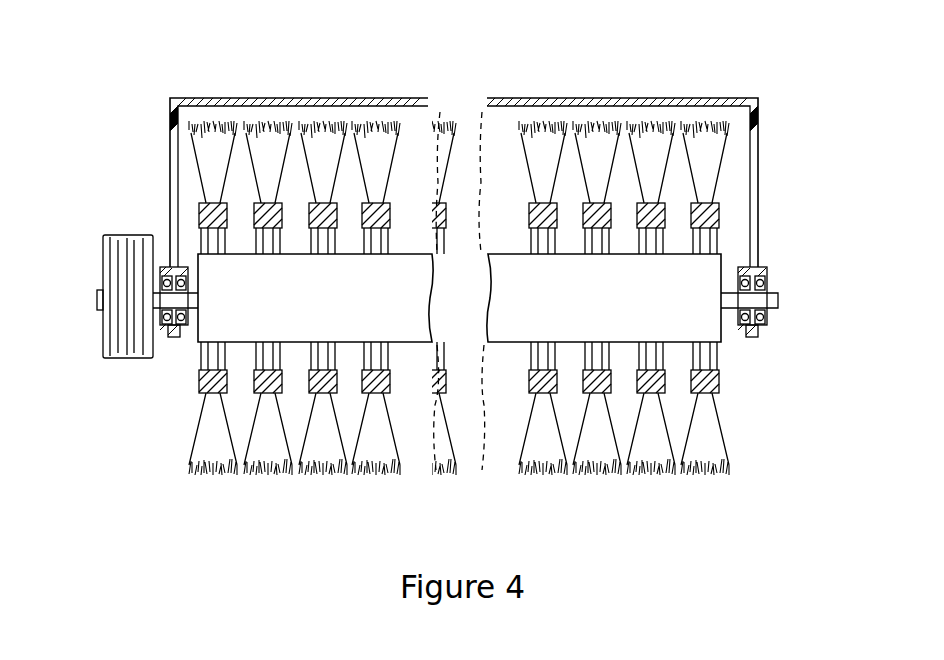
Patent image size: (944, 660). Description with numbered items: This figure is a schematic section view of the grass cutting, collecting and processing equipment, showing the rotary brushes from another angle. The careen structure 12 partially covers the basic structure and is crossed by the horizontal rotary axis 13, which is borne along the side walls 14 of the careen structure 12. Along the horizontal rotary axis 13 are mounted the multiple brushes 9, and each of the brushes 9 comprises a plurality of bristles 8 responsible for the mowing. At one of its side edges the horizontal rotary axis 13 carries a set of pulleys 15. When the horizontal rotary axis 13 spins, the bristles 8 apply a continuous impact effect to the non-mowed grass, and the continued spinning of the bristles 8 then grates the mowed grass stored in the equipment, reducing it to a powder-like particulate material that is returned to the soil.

The bristles 8 is at (705, 468).
The brushes 9 is at (722, 203).
The careen structure 12 is at (758, 135).
The horizontal rotary axis 13 is at (236, 320).
The side walls 14 is at (170, 163).
The set of pulleys 15 is at (133, 375).